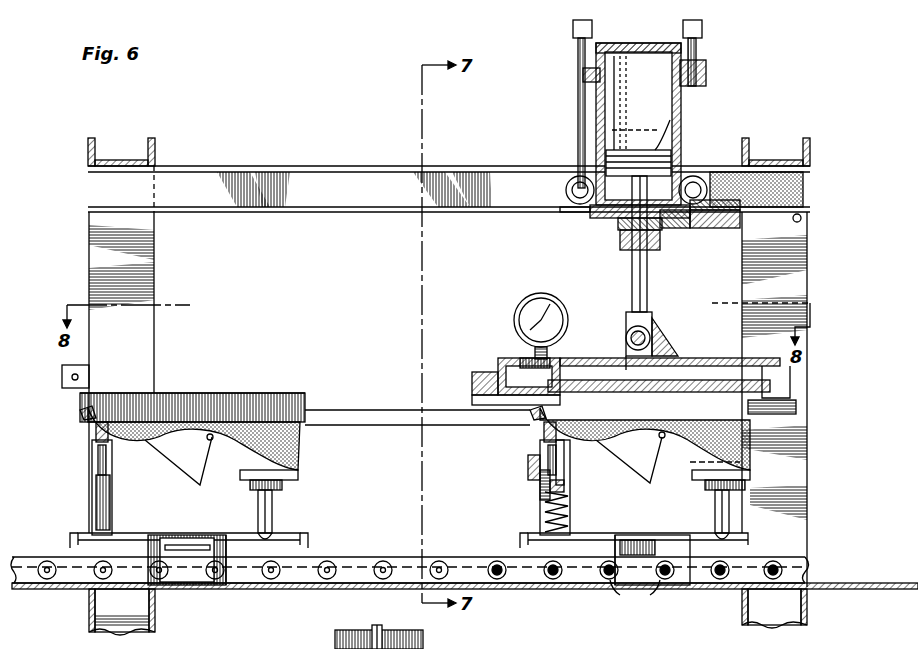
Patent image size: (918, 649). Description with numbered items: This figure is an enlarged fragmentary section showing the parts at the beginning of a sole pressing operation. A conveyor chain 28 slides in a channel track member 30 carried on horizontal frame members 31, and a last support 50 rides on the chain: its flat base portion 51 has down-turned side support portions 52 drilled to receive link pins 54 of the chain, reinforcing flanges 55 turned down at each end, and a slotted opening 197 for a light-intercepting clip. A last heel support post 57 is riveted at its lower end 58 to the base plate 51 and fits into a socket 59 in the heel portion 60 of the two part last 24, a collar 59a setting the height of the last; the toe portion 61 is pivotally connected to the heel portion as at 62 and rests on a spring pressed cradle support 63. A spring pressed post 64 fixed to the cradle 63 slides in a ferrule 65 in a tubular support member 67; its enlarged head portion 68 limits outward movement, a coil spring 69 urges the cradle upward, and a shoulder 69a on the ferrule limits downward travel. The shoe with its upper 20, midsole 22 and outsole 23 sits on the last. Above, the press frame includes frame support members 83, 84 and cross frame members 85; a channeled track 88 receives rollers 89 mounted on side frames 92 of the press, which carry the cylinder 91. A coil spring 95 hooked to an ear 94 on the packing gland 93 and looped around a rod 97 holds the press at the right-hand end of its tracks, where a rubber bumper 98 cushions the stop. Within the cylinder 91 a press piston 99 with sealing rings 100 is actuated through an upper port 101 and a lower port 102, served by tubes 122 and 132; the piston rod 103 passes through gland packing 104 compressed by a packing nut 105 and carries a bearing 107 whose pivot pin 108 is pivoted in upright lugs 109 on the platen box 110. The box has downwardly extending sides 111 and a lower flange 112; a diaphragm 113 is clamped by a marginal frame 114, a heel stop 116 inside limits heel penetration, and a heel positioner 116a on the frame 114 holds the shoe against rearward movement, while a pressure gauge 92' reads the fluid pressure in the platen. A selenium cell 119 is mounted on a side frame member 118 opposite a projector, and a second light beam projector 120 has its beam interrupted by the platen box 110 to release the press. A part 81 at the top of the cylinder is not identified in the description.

The upper 20 is at (298, 445).
The midsole 22 is at (303, 396).
The outsole 23 is at (232, 393).
The two part last 24 is at (403, 470).
The conveyor chain 28 is at (368, 560).
The channel track member 30 is at (300, 590).
The horizontal frame member 31 is at (89, 603).
The channel bracket 50 is at (300, 522).
The flat base portion 51 is at (245, 524).
The side support portion 52 is at (228, 548).
The link pin 54 is at (635, 595).
The reinforcing flange 55 is at (70, 544).
The last heel support post 57 is at (285, 493).
The lower end of the post 58 is at (295, 524).
The socket 59 is at (694, 470).
The collar 59a is at (744, 484).
The heel portion 60 is at (298, 470).
The toe portion 61 is at (82, 415).
The pivot connection 62 is at (658, 436).
The spring pressed cradle support 63 is at (96, 440).
The spring pressed post 64 is at (564, 455).
The ferrule 65 is at (92, 470).
The tubular support member 67 is at (95, 498).
The enlarged head portion 68 is at (564, 487).
The coil spring 69 is at (566, 508).
The shoulder 69a is at (528, 462).
The cylinder head 81 is at (648, 43).
The frame support member 83 is at (155, 622).
The frame support member 84 is at (770, 628).
The cross frame member 85 is at (152, 140).
The channeled track 88 is at (362, 175).
The roller 89 is at (567, 190).
The cylinder 91 is at (682, 100).
The side frame 92 is at (694, 168).
The pressure gauge 92' is at (525, 326).
The packing gland 93 is at (620, 232).
The ear 94 is at (684, 228).
The coil spring 95 is at (730, 228).
The rod 97 is at (797, 222).
The rubber bumper 98 is at (742, 172).
The press piston 99 is at (668, 140).
The sealing rings 100 is at (655, 150).
The port 101 is at (694, 80).
The second port 102 is at (582, 210).
The piston rod 103 is at (633, 280).
The gland packing 104 is at (620, 215).
The packing nut 105 is at (622, 248).
The bearing 107 is at (652, 320).
The pivot pin 108 is at (627, 338).
The upright lugs 109 is at (665, 350).
The platen box 110 is at (500, 360).
The downwardly extending sides 111 is at (594, 360).
The lower flange 112 is at (494, 385).
The diaphragm 113 is at (620, 370).
The marginal frame 114 is at (480, 400).
The heel stop 116 is at (750, 366).
The heel positioner 116a is at (780, 414).
The side frame member 118 is at (392, 412).
The selenium cell 119 is at (522, 360).
The second light beam projector 120 is at (62, 368).
The tube 122 is at (700, 48).
The tube 132 is at (578, 115).
The slotted opening 197 is at (198, 545).